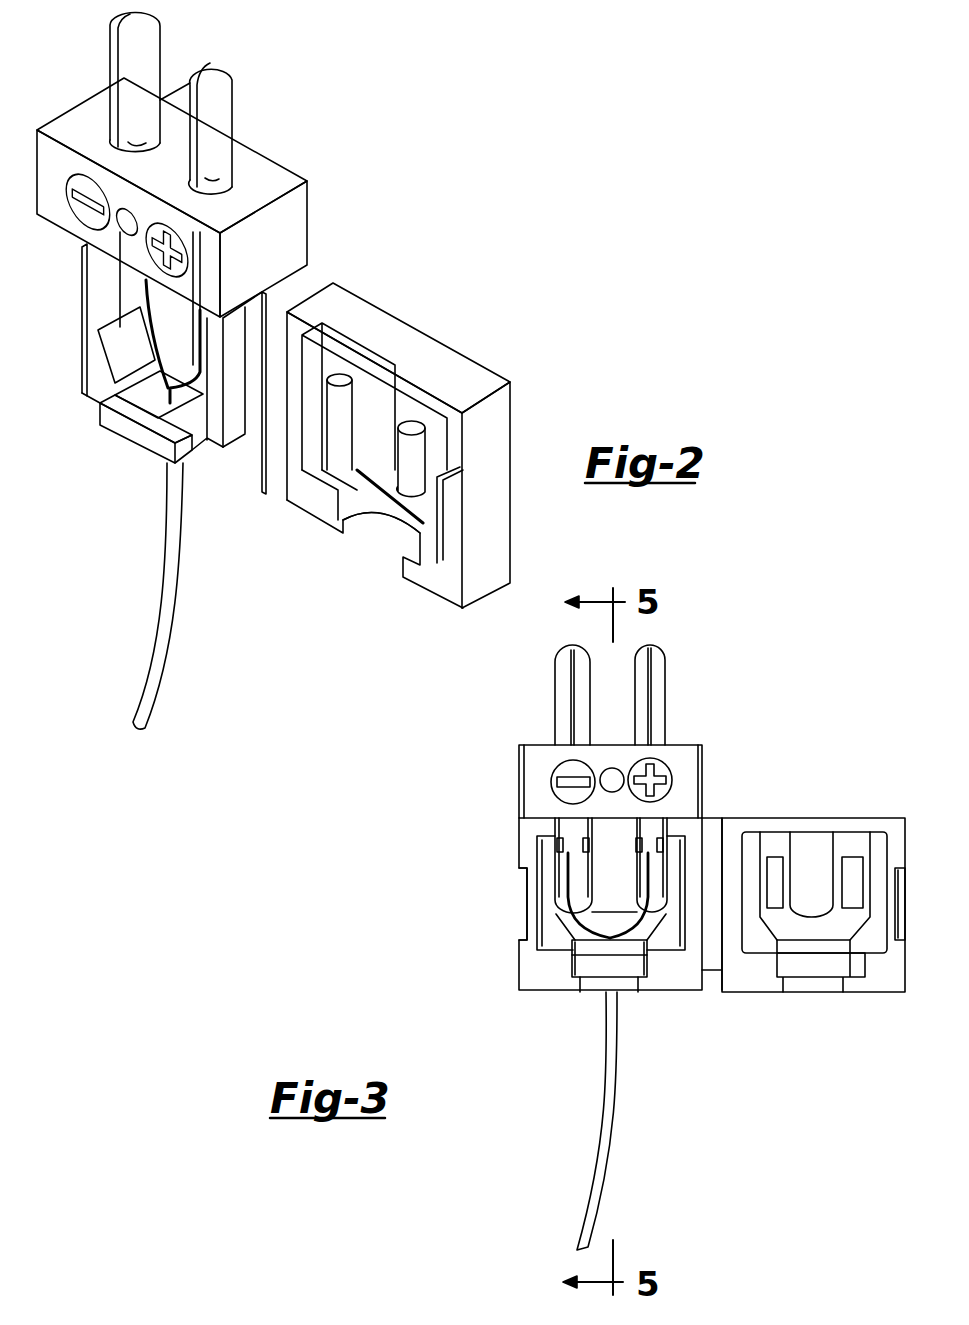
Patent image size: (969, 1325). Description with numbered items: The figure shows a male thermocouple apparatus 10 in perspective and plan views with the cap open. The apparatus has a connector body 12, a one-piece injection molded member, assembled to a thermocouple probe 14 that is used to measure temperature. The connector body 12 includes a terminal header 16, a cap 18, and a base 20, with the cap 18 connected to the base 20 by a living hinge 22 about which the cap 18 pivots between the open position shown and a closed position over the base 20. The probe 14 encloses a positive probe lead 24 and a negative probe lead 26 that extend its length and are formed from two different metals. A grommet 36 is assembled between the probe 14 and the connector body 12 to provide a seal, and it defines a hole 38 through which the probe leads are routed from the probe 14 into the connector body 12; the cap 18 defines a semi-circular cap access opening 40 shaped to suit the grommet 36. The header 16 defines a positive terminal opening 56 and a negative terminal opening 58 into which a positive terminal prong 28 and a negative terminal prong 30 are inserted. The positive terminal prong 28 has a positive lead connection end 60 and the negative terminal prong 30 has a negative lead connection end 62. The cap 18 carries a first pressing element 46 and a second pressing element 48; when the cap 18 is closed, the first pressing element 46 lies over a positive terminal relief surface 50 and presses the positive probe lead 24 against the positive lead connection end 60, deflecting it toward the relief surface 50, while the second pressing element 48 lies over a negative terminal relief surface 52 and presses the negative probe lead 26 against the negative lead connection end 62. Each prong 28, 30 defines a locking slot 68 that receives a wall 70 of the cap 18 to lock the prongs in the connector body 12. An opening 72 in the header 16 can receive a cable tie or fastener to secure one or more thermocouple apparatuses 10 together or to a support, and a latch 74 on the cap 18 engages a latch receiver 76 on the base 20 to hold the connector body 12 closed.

In FIG. 2, the male thermocouple apparatus 10 is at (337, 96).
In FIG. 2, the connector body 12 is at (307, 241).
In FIG. 2, the thermocouple probe 14 is at (167, 633).
In FIG. 3, the thermocouple probe 14 is at (607, 1148).
In FIG. 2, the terminal header 16 is at (280, 188).
In FIG. 3, the terminal header 16 is at (690, 764).
In FIG. 2, the cap 18 is at (390, 340).
In FIG. 3, the cap 18 is at (812, 852).
In FIG. 2, the base 20 is at (228, 466).
In FIG. 3, the base 20 is at (545, 992).
In FIG. 2, the living hinge 22 is at (270, 352).
In FIG. 3, the living hinge 22 is at (713, 837).
In FIG. 2, the positive probe lead 24 is at (197, 395).
In FIG. 3, the positive probe lead 24 is at (645, 876).
In FIG. 2, the negative probe lead 26 is at (133, 377).
In FIG. 3, the negative probe lead 26 is at (568, 885).
In FIG. 2, the positive terminal prong 28 is at (213, 93).
In FIG. 3, the positive terminal prong 28 is at (655, 672).
In FIG. 2, the negative terminal prong 30 is at (145, 47).
In FIG. 3, the negative terminal prong 30 is at (560, 672).
In FIG. 2, the grommet 36 is at (143, 437).
In FIG. 3, the grommet 36 is at (625, 978).
In FIG. 2, the hole 38 is at (157, 387).
In FIG. 2, the cap access opening 40 is at (393, 528).
In FIG. 3, the cap access opening 40 is at (815, 978).
In FIG. 2, the first pressing element 46 is at (340, 423).
In FIG. 3, the first pressing element 46 is at (852, 868).
In FIG. 2, the second pressing element 48 is at (412, 458).
In FIG. 3, the second pressing element 48 is at (771, 868).
In FIG. 2, the positive terminal relief surface 50 is at (213, 355).
In FIG. 2, the negative terminal relief surface 52 is at (90, 343).
In FIG. 2, the positive terminal opening 56 is at (217, 180).
In FIG. 2, the negative terminal opening 58 is at (137, 145).
In FIG. 3, the positive lead connection end 60 is at (655, 905).
In FIG. 3, the negative lead connection end 62 is at (562, 905).
In FIG. 3, the locking slot 68 is at (558, 830).
In FIG. 2, the wall 70 is at (420, 393).
In FIG. 3, the wall 70 is at (880, 822).
In FIG. 2, the opening 72 is at (128, 222).
In FIG. 3, the opening 72 is at (612, 770).
In FIG. 2, the latch 74 is at (443, 513).
In FIG. 3, the latch 74 is at (903, 896).
In FIG. 3, the latch receiver 76 is at (527, 870).